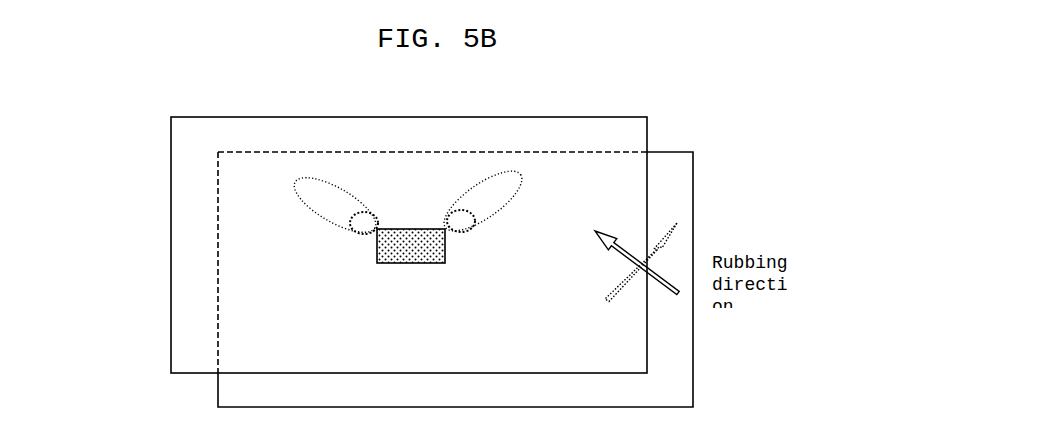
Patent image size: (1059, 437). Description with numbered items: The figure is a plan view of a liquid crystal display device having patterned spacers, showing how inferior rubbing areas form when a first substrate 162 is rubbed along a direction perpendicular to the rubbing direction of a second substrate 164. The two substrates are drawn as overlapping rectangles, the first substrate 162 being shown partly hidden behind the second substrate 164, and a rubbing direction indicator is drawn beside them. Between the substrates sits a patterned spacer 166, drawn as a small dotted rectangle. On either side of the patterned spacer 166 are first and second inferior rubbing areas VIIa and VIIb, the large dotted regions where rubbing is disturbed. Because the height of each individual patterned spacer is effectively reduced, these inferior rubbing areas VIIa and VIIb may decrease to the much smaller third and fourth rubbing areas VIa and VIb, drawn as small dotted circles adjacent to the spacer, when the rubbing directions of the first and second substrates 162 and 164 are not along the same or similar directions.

The first substrate 162 is at (230, 389).
The second substrate 164 is at (192, 342).
The spacer (dotted rectangle) 166 is at (413, 257).
The first inferior rubbing area VIIa is at (298, 205).
The third rubbing area VIa is at (348, 230).
The fourth rubbing area VIb is at (470, 225).
The second inferior rubbing area VIIb is at (517, 198).